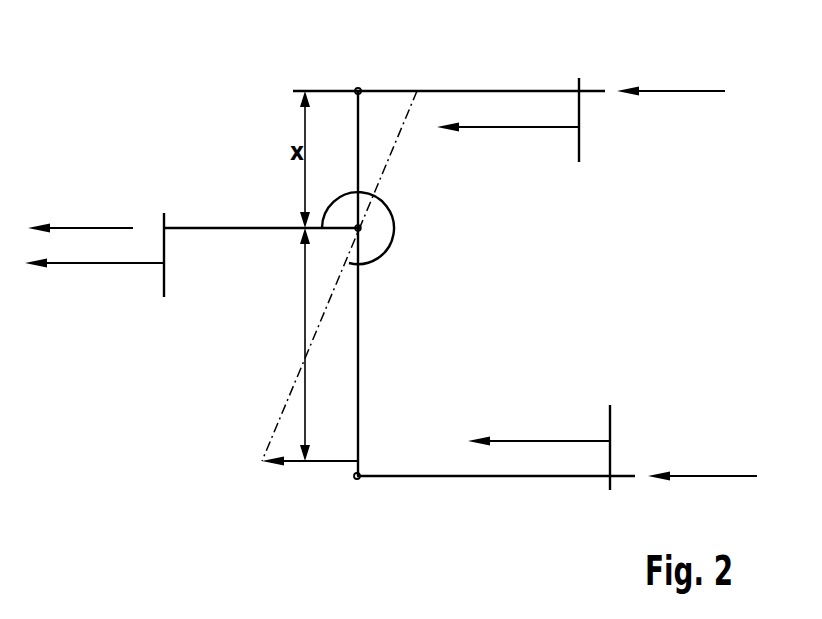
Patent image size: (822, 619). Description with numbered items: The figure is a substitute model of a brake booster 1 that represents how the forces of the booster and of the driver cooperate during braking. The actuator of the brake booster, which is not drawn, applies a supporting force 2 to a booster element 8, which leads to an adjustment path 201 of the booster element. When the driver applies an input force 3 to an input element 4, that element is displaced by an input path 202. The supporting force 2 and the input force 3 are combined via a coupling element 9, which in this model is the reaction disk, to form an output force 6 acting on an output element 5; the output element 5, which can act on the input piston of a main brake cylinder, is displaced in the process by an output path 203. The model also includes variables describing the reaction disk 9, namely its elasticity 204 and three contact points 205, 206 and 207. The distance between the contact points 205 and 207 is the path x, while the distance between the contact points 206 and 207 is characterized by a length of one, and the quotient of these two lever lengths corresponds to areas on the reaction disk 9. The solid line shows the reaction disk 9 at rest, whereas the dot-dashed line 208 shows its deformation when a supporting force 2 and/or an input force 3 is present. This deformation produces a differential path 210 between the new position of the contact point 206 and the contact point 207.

The brake booster 1 is at (300, 344).
The supporting force 2 is at (686, 90).
The input force 3 is at (703, 479).
The input element 4 is at (540, 479).
The output element 5 is at (236, 231).
The output force 6 is at (90, 226).
The booster element 8 is at (509, 90).
The coupling element 9 is at (359, 352).
The adjustment path 201 is at (510, 130).
The input path 202 is at (541, 440).
The output path 203 is at (93, 266).
The elasticity 204 is at (394, 226).
The first contact point 205 is at (358, 88).
The second contact point 206 is at (357, 480).
The third contact point 207 is at (360, 231).
The dot-dashed line 208 is at (283, 410).
The differential path 210 is at (318, 463).